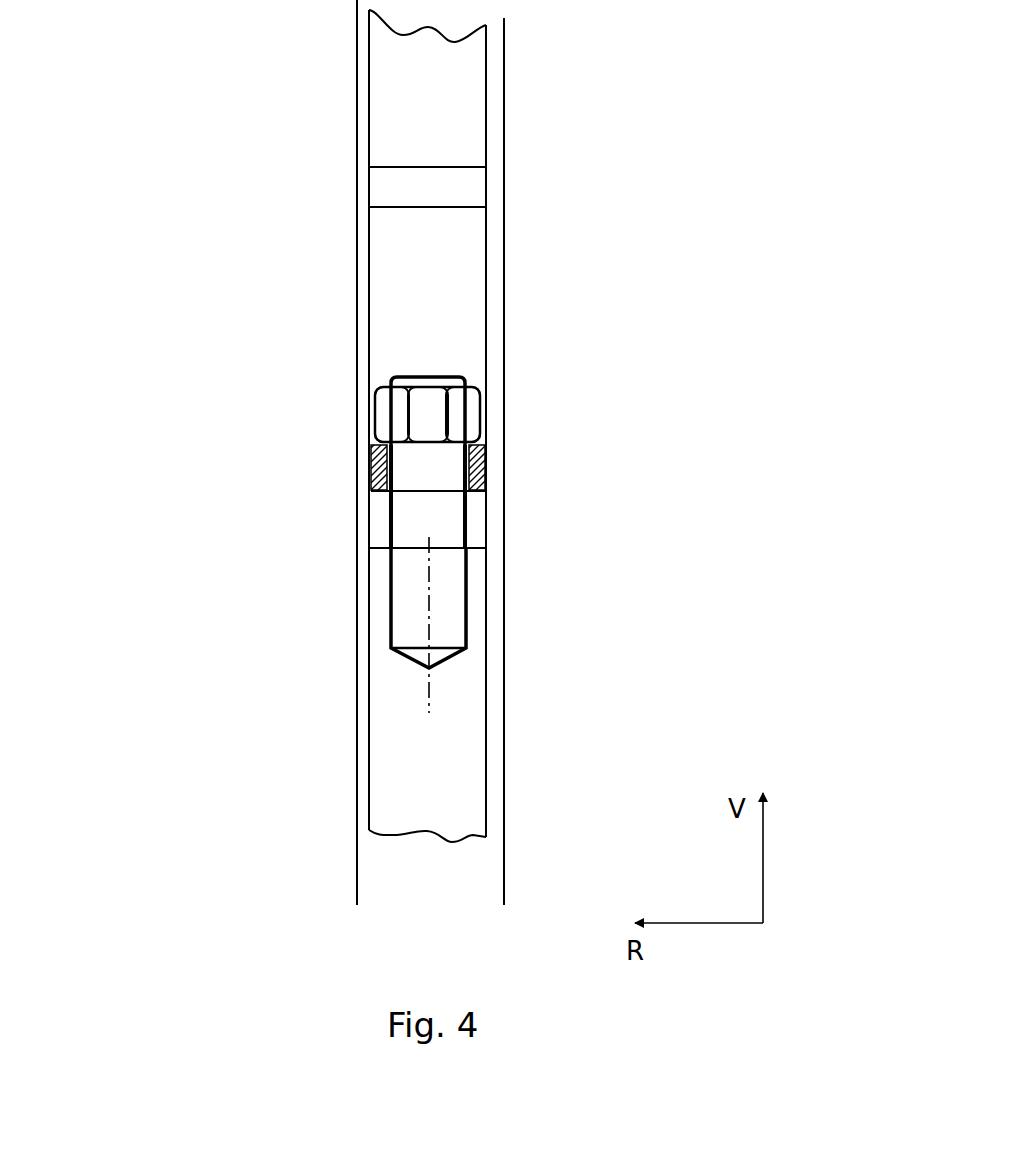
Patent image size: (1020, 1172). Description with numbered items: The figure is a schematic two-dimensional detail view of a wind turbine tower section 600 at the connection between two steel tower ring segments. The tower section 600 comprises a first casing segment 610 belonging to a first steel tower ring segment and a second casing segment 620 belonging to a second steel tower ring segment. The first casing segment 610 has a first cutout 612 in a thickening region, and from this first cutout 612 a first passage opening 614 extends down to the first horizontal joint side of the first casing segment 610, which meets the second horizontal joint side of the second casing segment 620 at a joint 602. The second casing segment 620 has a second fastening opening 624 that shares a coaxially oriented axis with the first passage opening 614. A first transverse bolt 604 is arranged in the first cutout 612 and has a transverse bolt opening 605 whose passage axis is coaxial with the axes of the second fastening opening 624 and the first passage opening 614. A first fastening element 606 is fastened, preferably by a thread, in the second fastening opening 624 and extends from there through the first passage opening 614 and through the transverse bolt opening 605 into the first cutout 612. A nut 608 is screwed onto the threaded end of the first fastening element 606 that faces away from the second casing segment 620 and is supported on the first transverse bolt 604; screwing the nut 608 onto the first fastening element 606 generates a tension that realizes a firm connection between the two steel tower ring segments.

The tower section 600 is at (228, 205).
The first casing segment 610 is at (537, 128).
The first cutout 612 is at (488, 308).
The second casing segment 620 is at (520, 752).
The joint 602 is at (491, 549).
The first transverse bolt 604 is at (373, 470).
The transverse bolt opening 605 is at (478, 458).
The nut 608 is at (383, 412).
The first fastening element 606 is at (425, 590).
The first passage opening 614 is at (471, 513).
The second fastening opening 624 is at (471, 622).